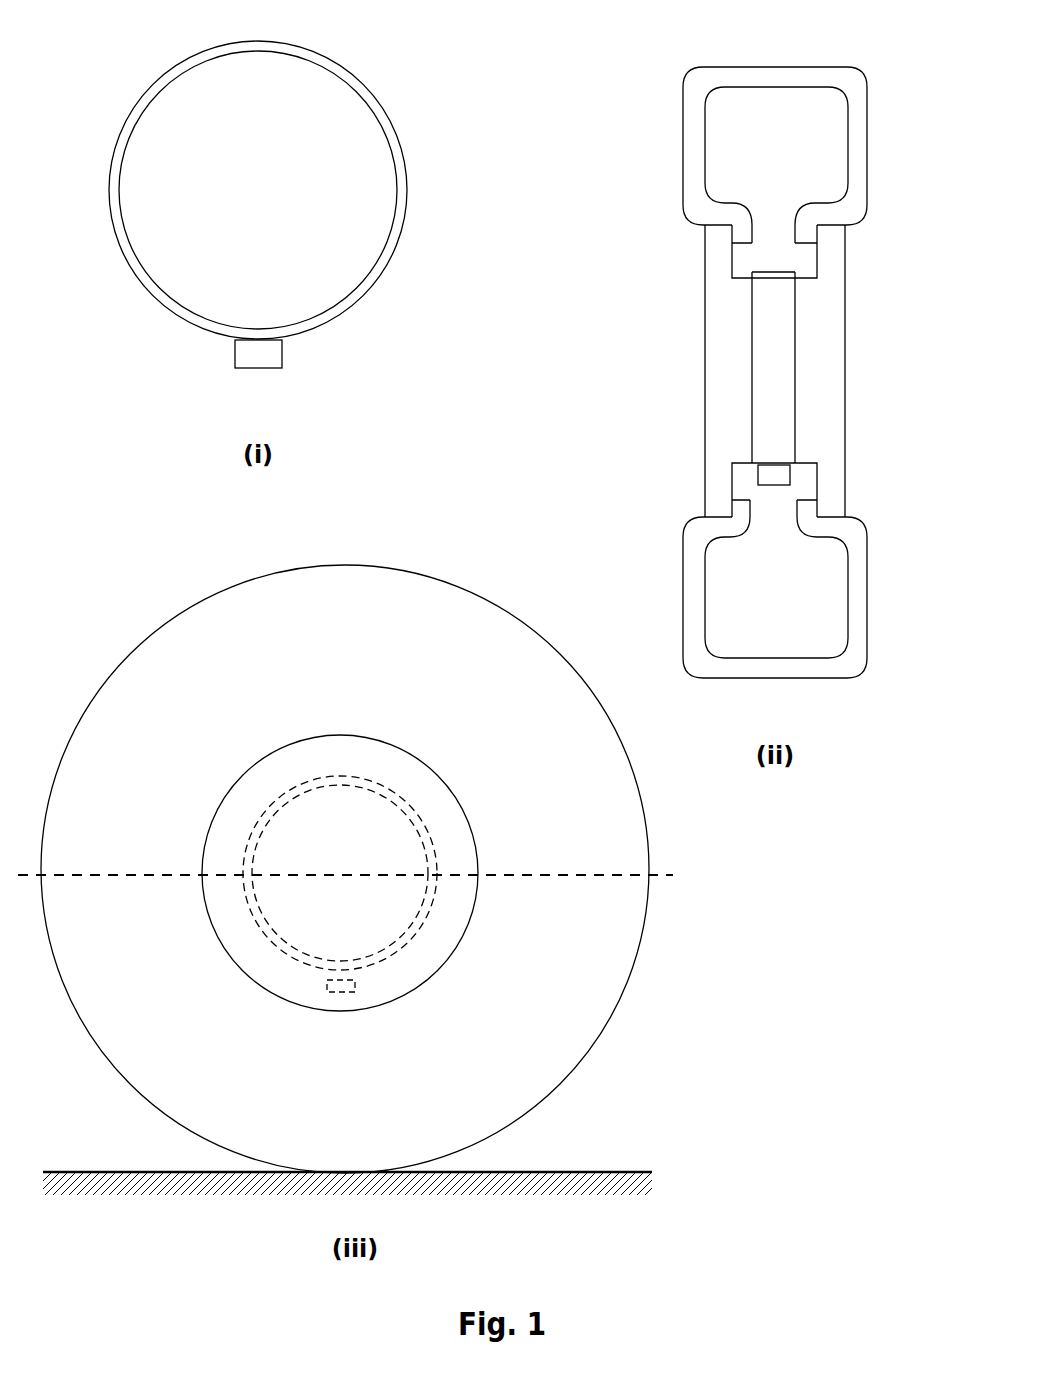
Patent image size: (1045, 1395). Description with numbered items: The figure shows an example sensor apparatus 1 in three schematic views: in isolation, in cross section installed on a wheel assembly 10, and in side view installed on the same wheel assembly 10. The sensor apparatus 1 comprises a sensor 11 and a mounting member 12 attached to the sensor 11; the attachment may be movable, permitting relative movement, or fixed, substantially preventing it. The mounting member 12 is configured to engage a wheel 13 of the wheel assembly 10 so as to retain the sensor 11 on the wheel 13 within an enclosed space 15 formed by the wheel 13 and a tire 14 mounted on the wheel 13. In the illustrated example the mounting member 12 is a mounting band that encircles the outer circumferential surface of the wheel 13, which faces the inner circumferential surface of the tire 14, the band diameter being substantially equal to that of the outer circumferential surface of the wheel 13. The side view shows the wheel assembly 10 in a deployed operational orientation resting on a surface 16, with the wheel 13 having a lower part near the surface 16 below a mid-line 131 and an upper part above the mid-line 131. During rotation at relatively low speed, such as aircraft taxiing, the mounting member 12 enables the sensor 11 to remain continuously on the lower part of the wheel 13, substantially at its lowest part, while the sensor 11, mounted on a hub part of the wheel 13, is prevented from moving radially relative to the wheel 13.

The sensor apparatus 1 is at (480, 536).
The wheel assembly 10 is at (643, 211).
The sensor 11 is at (260, 355).
The mounting member 12 is at (387, 115).
The wheel 13 is at (825, 408).
The mid-line 131 is at (663, 875).
The tire 14 is at (845, 73).
The enclosed space 15 is at (807, 583).
The surface 16 is at (133, 1172).